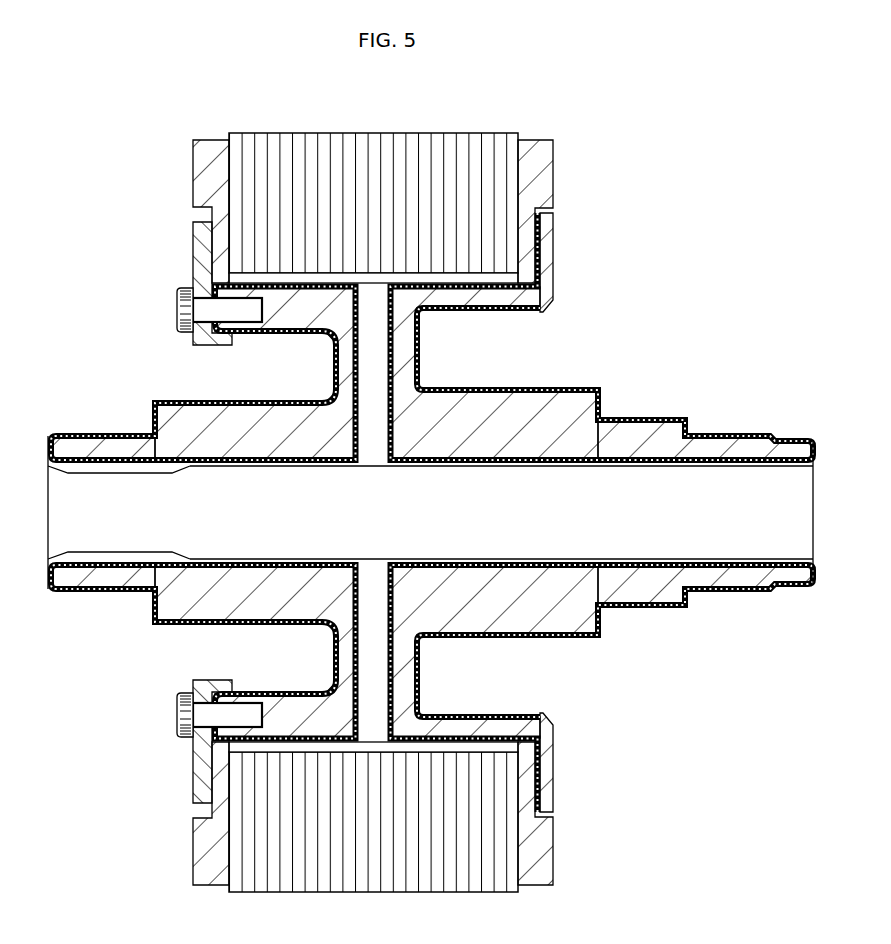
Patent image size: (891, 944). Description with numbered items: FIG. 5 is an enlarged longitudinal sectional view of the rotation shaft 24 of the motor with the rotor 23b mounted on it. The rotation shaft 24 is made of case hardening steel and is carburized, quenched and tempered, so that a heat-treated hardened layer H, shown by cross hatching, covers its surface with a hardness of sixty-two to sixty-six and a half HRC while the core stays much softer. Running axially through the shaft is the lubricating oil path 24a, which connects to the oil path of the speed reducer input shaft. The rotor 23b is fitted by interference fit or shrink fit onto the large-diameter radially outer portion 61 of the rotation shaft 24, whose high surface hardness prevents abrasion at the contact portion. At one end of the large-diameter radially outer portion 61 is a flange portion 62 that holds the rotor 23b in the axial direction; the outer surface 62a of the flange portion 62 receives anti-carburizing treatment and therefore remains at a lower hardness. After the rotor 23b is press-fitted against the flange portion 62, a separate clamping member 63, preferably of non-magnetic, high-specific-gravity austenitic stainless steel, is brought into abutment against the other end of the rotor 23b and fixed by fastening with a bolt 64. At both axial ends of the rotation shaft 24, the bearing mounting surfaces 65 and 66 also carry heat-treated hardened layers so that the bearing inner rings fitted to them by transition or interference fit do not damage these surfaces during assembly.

The rotor 23b is at (405, 173).
The large-diameter radially outer portion 61 is at (441, 268).
The flange portion 62 is at (553, 244).
The outer surface of the flange portion 62a is at (553, 285).
The clamping member 63 is at (194, 243).
The bolt 64 is at (177, 310).
The bearing mounting surface 65 is at (728, 433).
The bearing mounting surface 66 is at (107, 433).
The rotation shaft of the motor 24 is at (550, 422).
The lubricating oil path 24a is at (740, 500).
The heat-treated hardened layer H is at (481, 389).